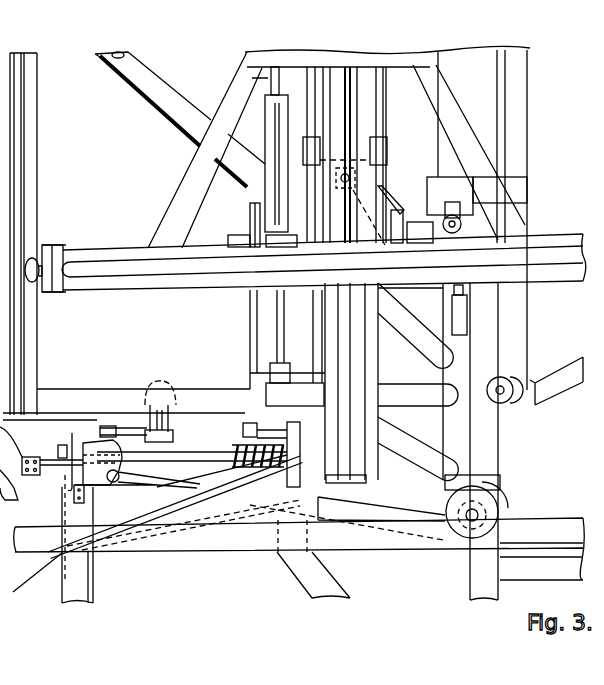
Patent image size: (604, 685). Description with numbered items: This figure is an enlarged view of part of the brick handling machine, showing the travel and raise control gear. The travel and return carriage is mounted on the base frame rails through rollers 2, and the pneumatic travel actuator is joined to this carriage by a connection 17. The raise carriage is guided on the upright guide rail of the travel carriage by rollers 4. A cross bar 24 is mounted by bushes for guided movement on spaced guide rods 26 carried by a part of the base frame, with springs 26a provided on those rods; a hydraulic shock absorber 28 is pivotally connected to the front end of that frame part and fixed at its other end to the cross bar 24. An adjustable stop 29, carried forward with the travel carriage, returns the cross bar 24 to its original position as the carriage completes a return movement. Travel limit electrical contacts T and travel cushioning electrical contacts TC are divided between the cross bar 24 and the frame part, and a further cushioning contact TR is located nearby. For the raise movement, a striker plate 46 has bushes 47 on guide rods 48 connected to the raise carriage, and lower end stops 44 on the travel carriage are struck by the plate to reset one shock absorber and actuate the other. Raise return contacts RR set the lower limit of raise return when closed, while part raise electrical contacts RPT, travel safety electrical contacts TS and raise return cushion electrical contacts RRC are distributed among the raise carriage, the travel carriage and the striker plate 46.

The travel safety electrical contacts TS is at (277, 217).
The part raise electrical contacts RPT is at (250, 232).
The guide rods 48 is at (313, 93).
The bushes 47 is at (317, 143).
The striker plate 46 is at (360, 170).
The raise return cushion electrical contacts RRC is at (450, 197).
The rollers 4 is at (512, 415).
The lower end stops 44 is at (395, 262).
The raise return contacts RR is at (464, 289).
The connection 17 is at (22, 440).
The cross bar 24 is at (75, 440).
The travel limit electrical contacts T is at (233, 426).
The guide rods 26 is at (206, 457).
The adjustable stop 29 is at (155, 436).
The travel cushioning electrical contacts TC is at (37, 478).
The trip release TR is at (157, 486).
The springs 26a is at (257, 478).
The hydraulic shock absorber 28 is at (384, 511).
The rollers 2 is at (492, 508).